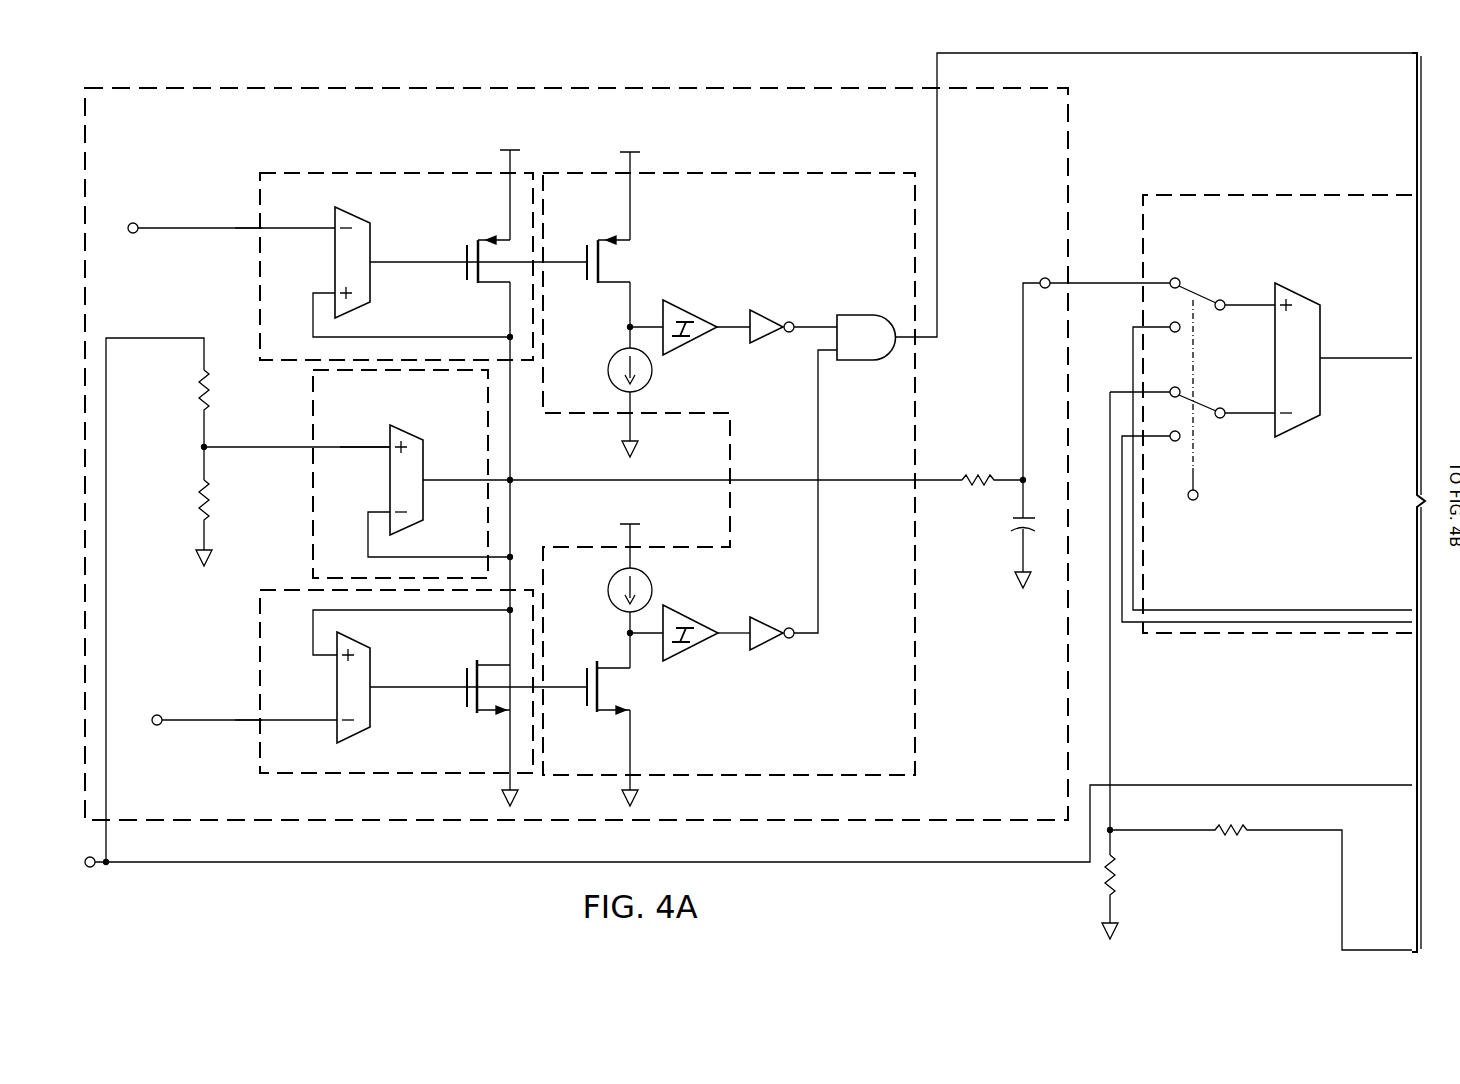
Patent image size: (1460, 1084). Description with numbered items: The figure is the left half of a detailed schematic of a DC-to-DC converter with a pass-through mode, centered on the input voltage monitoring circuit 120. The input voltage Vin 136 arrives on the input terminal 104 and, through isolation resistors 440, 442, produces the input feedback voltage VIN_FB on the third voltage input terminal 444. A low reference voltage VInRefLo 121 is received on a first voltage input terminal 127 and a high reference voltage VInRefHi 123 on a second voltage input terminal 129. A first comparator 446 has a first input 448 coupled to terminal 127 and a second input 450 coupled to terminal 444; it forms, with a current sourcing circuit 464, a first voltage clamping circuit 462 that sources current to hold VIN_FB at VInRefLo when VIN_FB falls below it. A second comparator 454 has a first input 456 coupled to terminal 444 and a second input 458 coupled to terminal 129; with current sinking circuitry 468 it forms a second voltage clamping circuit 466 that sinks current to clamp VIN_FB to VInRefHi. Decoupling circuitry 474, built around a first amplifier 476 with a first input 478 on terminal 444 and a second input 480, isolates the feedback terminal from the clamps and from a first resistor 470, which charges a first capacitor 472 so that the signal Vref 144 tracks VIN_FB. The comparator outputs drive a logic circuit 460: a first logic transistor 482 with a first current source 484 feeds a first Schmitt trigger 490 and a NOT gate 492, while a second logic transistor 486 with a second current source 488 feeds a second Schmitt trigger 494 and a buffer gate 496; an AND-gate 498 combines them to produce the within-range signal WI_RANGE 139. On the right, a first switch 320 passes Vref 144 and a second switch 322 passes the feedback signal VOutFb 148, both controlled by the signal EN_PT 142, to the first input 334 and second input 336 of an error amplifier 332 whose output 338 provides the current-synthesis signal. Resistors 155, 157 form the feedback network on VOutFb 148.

The input terminal 104 is at (90, 868).
The input voltage monitoring circuit 120 is at (1070, 190).
The low reference voltage VInRefLo 121 is at (258, 232).
The high reference voltage VInRefHi 123 is at (258, 725).
The first voltage input terminal 127 is at (130, 222).
The second voltage input terminal 129 is at (155, 727).
The input voltage Vin 136 is at (172, 868).
The within-range signal WI_RANGE 139 is at (938, 175).
The signal EN_PT 142 is at (1195, 470).
The signal Vref 144 is at (1105, 290).
The signal VOutFb 148 is at (1112, 718).
The resistor 155 is at (1232, 835).
The resistor 157 is at (1115, 875).
The first switch 320 is at (1207, 296).
The second switch 322 is at (1207, 404).
The error amplifier 332 is at (1290, 298).
The first input 334 is at (1272, 318).
The second input 336 is at (1272, 426).
The output 338 is at (1330, 352).
The resistor 440 is at (198, 388).
The resistor 442 is at (198, 507).
The third voltage input terminal 444 is at (262, 452).
The first comparator 446 is at (372, 275).
The first input 448 is at (335, 220).
The second input 450 is at (335, 290).
The second comparator 454 is at (372, 678).
The first input 456 is at (335, 662).
The second input 458 is at (335, 727).
The logic circuit 460 is at (785, 172).
The first voltage clamping circuit 462 is at (370, 172).
The current sourcing circuit 464 is at (465, 246).
The second voltage clamping circuit 466 is at (258, 641).
The current sinking circuitry 468 is at (465, 700).
The first resistor 470 is at (975, 477).
The first capacitor 472 is at (1010, 531).
The decoupling circuitry 474 is at (312, 552).
The first amplifier 476 is at (410, 432).
The first input 478 is at (388, 440).
The second input 480 is at (388, 505).
The first logic transistor 482 is at (587, 250).
The first current source 484 is at (617, 356).
The second logic transistor 486 is at (583, 715).
The second current source 488 is at (612, 597).
The first Schmitt trigger 490 is at (690, 318).
The NOT gate 492 is at (770, 314).
The second Schmitt trigger 494 is at (690, 650).
The buffer gate 496 is at (770, 646).
The AND-gate 498 is at (860, 314).